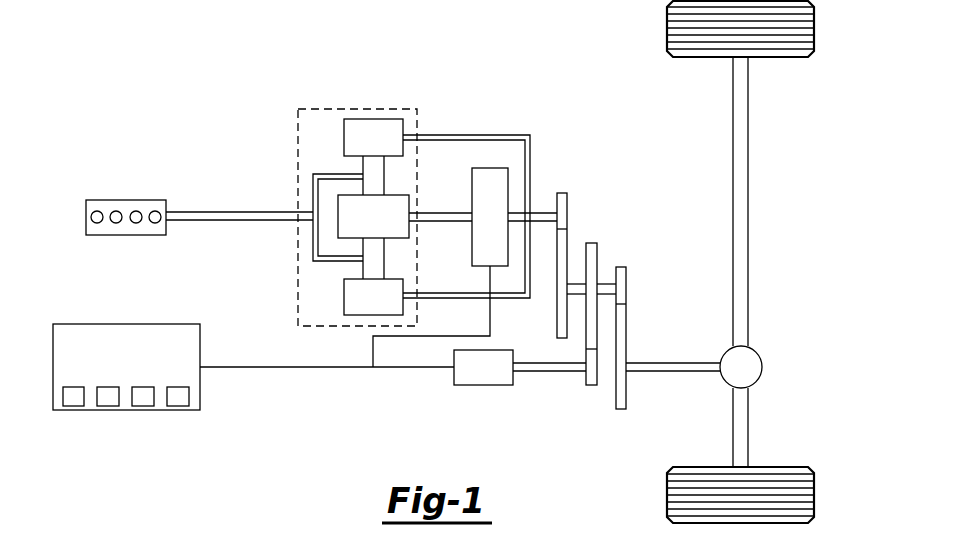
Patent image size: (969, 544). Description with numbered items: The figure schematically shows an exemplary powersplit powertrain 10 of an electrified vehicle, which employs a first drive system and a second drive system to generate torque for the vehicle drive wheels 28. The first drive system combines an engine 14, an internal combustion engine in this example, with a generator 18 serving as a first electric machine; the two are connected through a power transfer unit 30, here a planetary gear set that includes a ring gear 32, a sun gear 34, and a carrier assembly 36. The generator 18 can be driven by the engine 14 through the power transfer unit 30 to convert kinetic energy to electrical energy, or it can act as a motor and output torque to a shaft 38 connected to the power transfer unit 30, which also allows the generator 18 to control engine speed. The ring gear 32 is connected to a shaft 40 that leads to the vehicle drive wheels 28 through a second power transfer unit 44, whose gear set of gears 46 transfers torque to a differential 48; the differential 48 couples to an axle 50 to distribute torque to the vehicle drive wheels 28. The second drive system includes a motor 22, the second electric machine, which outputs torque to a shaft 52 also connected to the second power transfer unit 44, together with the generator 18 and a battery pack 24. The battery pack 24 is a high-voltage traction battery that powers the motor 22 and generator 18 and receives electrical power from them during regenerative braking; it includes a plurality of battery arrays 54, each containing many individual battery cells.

The powertrain 10 is at (163, 33).
The engine 14 is at (86, 200).
The generator 18 is at (508, 182).
The motor 22 is at (483, 385).
The battery pack 24 is at (128, 324).
The vehicle drive wheels 28 is at (814, 30).
The power transfer unit 30 is at (417, 111).
The ring gear 32 is at (344, 138).
The sun gear 34 is at (398, 238).
The carrier assembly 36 is at (313, 196).
The shaft 38 is at (445, 212).
The shaft 40 is at (540, 222).
The second power transfer unit 44 is at (596, 201).
The gears 46 is at (597, 252).
The differential 48 is at (762, 367).
The axle 50 is at (748, 204).
The shaft 52 is at (549, 371).
The battery arrays 54 is at (73, 406).